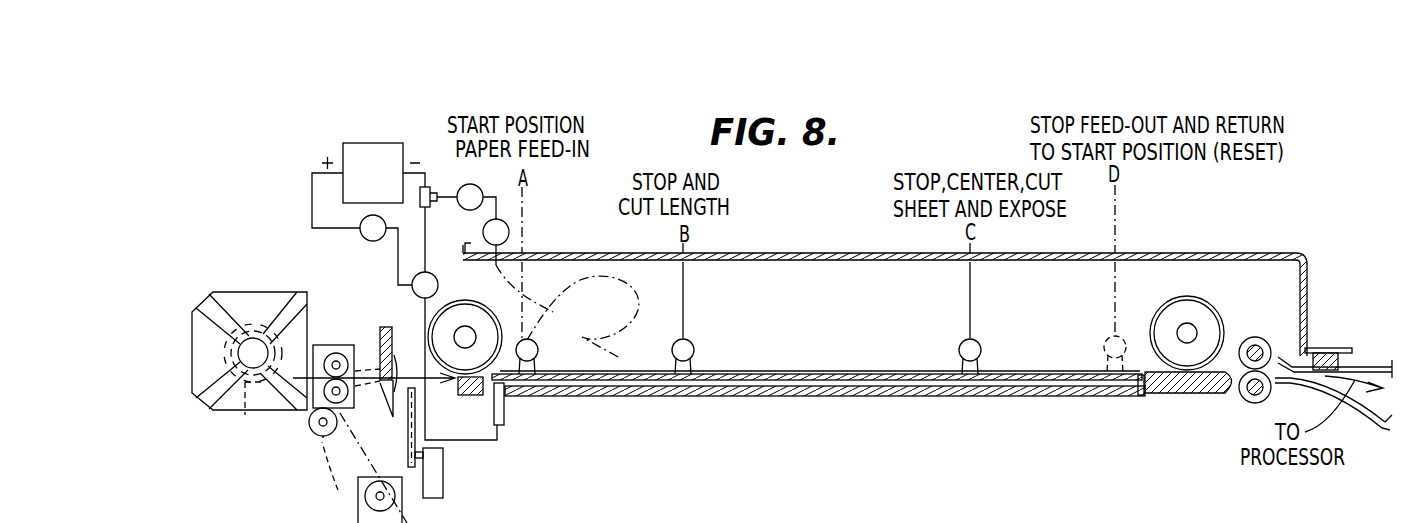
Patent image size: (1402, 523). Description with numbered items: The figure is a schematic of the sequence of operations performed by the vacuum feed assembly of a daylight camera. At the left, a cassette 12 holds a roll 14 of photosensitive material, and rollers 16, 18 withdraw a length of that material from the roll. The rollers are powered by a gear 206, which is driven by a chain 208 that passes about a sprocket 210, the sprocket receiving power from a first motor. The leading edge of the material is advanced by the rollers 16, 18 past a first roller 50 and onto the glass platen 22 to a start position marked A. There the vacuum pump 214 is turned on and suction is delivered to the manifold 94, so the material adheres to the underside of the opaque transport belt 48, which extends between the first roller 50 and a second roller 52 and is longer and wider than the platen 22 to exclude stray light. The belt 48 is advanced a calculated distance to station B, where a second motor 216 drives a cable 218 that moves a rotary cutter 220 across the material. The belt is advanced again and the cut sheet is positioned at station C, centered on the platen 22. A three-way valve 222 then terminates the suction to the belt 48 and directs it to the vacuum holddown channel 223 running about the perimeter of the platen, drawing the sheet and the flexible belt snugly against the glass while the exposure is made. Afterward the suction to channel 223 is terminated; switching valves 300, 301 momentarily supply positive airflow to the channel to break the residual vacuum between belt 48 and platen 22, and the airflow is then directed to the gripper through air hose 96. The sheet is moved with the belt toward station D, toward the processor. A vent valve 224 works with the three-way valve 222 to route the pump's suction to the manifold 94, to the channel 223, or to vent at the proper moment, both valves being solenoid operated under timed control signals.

The cassette 12 is at (260, 292).
The roll of photosensitive material 14 is at (245, 415).
The roller 16 is at (337, 352).
The roller 18 is at (312, 390).
The glass platen 22 is at (790, 396).
The belt 48 is at (740, 372).
The first roller 50 is at (467, 320).
The second roller 52 is at (1207, 322).
The manifold 94 is at (691, 346).
The air hose 96 is at (618, 357).
The gear 206 is at (328, 435).
The chain 208 is at (337, 488).
The sprocket 210 is at (390, 502).
The vacuum pump 214 is at (345, 143).
The second motor 216 is at (440, 480).
The cable 218 is at (408, 430).
The rotary cutter 220 is at (394, 372).
The three-way valve 222 is at (477, 209).
The channel 223 is at (505, 400).
The vent valve 224 is at (509, 232).
The switching valve 300 is at (366, 238).
The switching valve 301 is at (412, 290).